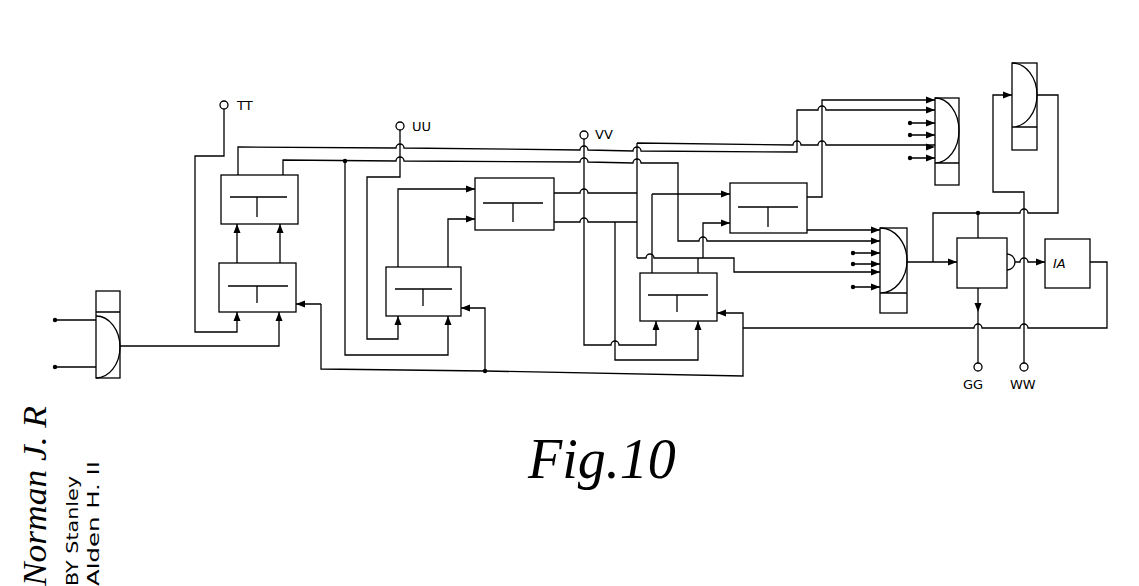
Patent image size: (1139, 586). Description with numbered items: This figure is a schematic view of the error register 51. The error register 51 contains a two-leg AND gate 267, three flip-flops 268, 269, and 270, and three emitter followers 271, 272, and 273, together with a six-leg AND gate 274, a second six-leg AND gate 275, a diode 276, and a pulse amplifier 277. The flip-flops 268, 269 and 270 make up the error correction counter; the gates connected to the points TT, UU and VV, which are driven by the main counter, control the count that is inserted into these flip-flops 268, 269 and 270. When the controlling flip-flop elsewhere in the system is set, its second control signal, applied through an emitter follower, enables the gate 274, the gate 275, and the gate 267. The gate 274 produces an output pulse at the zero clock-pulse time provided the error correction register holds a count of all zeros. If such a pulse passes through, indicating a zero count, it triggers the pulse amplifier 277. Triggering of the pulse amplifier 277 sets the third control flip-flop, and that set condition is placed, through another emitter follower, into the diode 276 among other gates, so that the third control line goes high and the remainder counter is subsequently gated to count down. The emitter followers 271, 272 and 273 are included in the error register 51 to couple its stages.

The error register 51 is at (703, 140).
The two-leg AND gate 267 is at (120, 300).
The flip-flop 268 is at (296, 271).
The flip-flop 269 is at (461, 282).
The flip-flop 270 is at (717, 286).
The emitter follower 271 is at (289, 187).
The emitter follower 272 is at (531, 226).
The emitter follower 273 is at (791, 190).
The six-leg AND gate 274 is at (899, 228).
The six-leg AND gate 275 is at (952, 97).
The diode 276 is at (1030, 63).
The pulse amplifier 277 is at (969, 282).